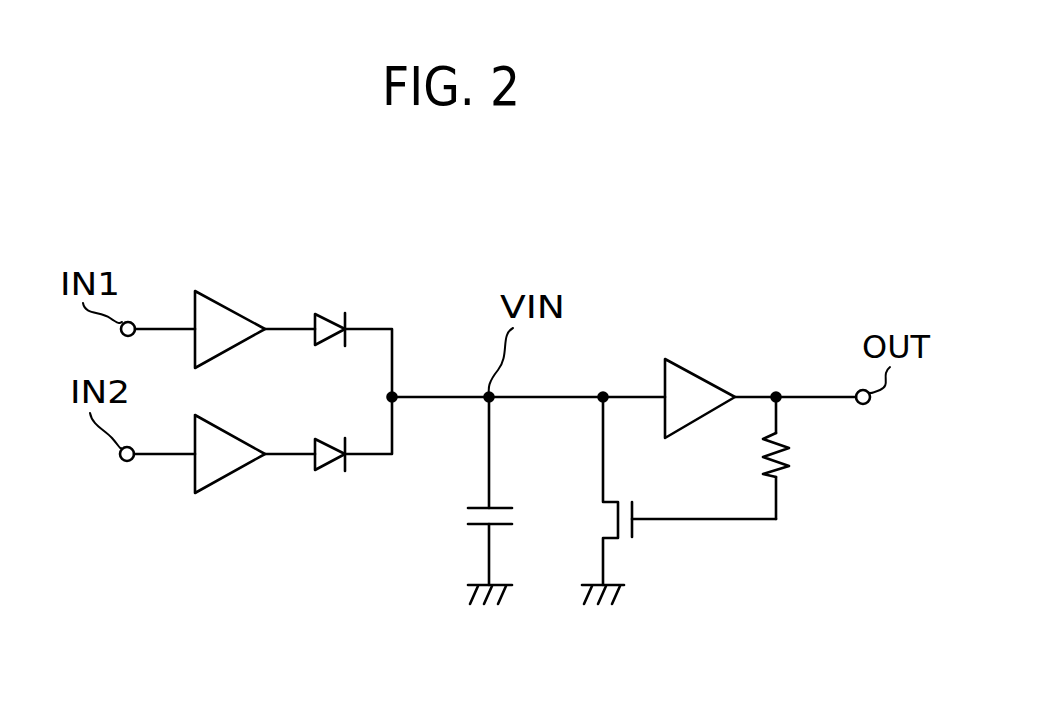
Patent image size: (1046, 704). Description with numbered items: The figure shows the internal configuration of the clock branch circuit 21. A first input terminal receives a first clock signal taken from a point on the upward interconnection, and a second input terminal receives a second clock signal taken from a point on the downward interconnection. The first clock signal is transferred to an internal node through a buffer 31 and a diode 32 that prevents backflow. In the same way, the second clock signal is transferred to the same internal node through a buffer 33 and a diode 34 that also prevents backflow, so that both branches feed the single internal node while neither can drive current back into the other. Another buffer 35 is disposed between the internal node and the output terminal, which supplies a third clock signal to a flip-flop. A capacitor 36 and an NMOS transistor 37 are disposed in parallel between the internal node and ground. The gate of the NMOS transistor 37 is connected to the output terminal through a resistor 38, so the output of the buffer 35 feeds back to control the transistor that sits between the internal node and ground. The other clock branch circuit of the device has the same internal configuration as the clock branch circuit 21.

The clock branch circuit 21 is at (688, 202).
The buffer 31 is at (232, 310).
The diode 32 is at (345, 315).
The buffer 33 is at (230, 478).
The diode 34 is at (346, 471).
The buffer 35 is at (700, 372).
The capacitor 36 is at (478, 507).
The NMOS transistor 37 is at (633, 530).
The resistor 38 is at (790, 455).